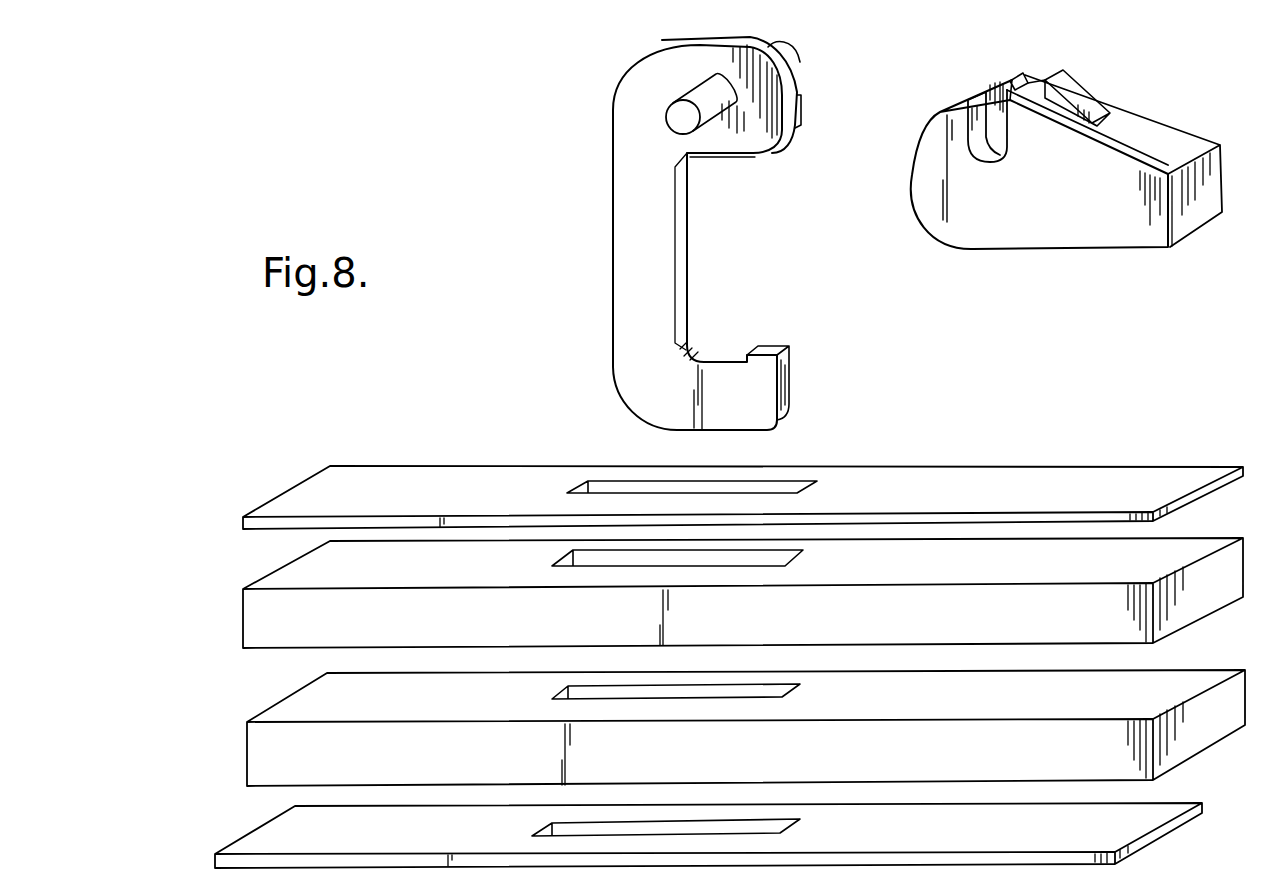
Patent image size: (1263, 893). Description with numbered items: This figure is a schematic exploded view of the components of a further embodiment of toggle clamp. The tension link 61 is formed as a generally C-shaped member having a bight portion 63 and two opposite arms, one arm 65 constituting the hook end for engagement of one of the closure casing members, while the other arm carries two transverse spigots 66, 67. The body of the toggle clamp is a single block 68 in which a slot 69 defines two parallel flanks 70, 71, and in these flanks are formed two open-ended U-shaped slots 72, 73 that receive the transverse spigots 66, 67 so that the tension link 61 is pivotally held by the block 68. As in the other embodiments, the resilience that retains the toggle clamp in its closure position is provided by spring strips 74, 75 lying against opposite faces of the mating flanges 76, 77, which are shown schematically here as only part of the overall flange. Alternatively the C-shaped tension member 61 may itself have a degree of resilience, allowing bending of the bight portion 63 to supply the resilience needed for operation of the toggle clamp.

The tension link 61 is at (612, 214).
The bight portion 63 is at (660, 243).
The arm 65 is at (720, 354).
The transverse spigot 66 is at (703, 92).
The transverse spigot 67 is at (800, 60).
The block 68 is at (1058, 216).
The slot 69 is at (1097, 98).
The flank 70 is at (992, 90).
The flank 71 is at (942, 152).
The U-shaped slot 72 is at (966, 144).
The U-shaped slot 73 is at (1037, 82).
The spring strip 74 is at (303, 483).
The spring strip 75 is at (290, 820).
The mating flange 76 is at (303, 561).
The mating flange 77 is at (300, 693).